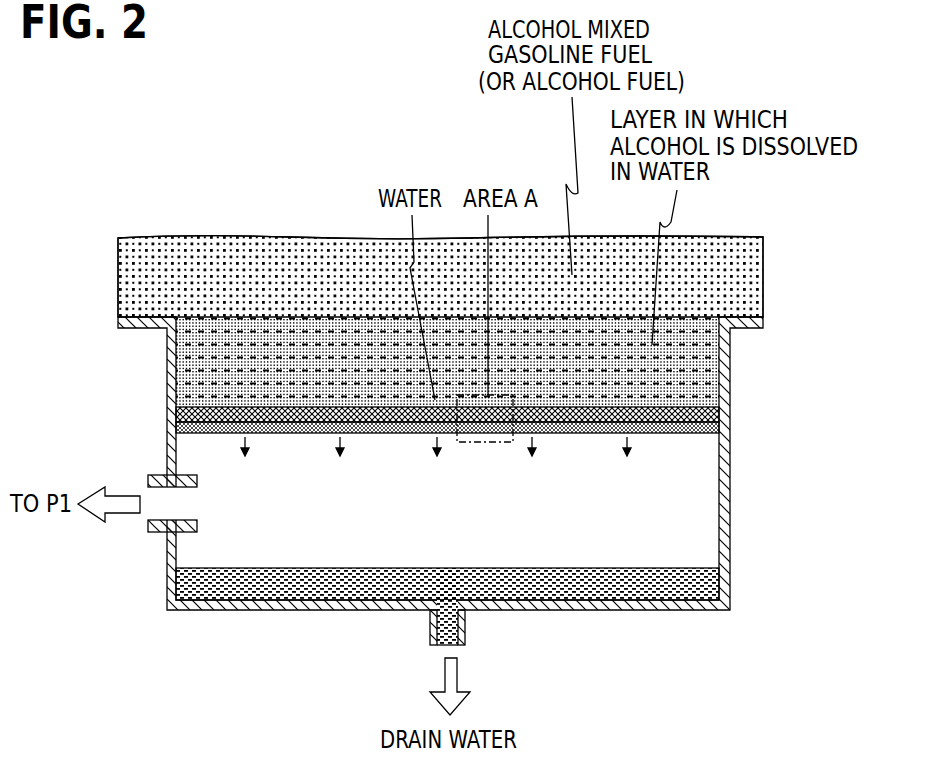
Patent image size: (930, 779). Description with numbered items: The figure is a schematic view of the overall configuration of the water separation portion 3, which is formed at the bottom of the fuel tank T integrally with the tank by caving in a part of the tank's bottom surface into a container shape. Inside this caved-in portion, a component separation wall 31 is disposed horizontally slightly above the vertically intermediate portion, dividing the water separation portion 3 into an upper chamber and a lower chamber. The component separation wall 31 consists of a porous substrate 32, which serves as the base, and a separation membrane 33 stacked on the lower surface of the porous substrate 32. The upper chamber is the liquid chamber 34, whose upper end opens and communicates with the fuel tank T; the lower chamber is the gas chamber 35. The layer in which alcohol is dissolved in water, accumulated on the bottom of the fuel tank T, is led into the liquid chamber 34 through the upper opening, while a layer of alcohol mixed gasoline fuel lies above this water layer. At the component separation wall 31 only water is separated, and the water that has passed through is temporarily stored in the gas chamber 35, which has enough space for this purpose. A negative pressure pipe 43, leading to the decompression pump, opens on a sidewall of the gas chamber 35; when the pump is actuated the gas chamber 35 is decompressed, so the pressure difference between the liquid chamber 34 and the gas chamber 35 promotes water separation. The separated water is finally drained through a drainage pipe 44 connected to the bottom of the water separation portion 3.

The fuel tank T is at (121, 278).
The water separation portion 3 is at (650, 624).
The component separation wall 31 is at (444, 281).
The porous substrate 32 is at (207, 406).
The separation membrane 33 is at (327, 433).
The liquid chamber 34 is at (695, 375).
The gas chamber 35 is at (692, 495).
The negative pressure pipe 43 is at (152, 533).
The drainage pipe 44 is at (428, 633).